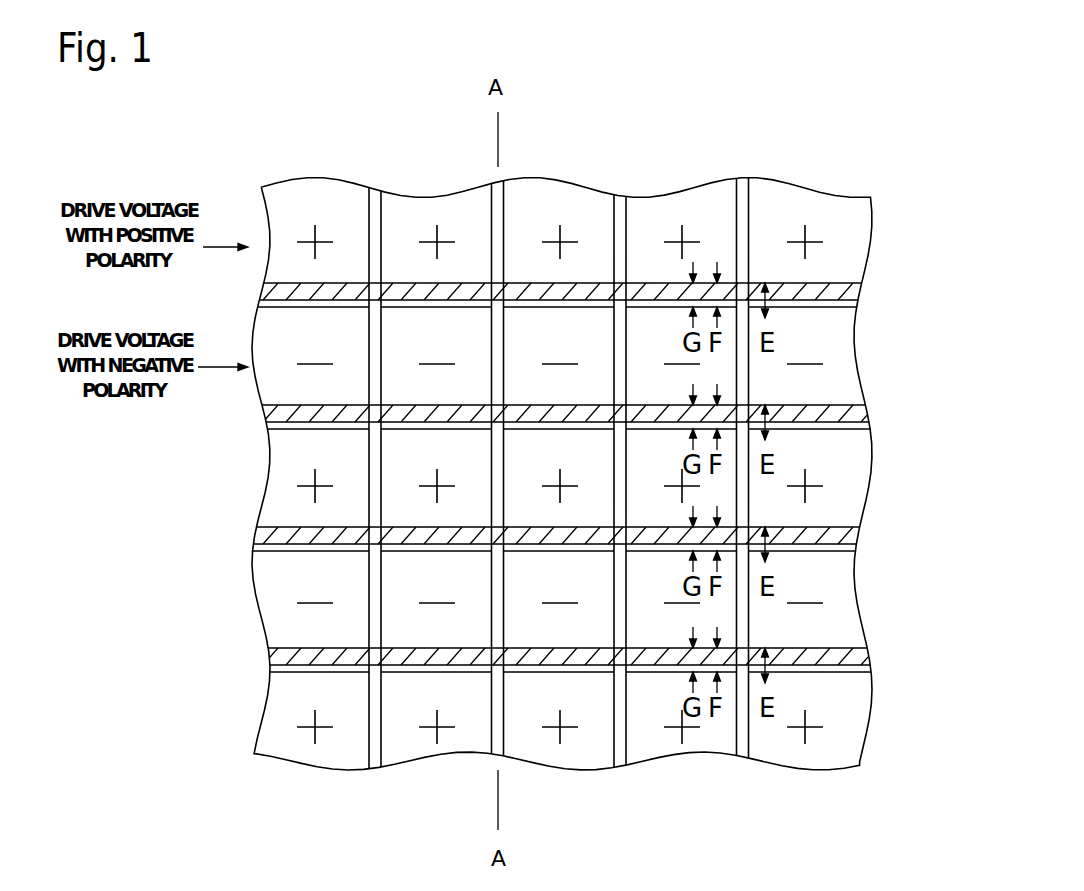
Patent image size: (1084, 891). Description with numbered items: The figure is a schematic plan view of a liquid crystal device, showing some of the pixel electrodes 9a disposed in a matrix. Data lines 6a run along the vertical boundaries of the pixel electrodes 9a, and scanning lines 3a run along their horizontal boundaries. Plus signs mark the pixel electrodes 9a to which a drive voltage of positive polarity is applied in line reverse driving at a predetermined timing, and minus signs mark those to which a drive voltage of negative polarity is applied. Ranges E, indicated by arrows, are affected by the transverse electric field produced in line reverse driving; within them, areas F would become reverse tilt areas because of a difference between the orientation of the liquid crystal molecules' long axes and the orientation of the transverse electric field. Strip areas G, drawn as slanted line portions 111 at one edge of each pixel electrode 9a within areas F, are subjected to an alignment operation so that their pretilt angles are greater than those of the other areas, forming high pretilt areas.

The scanning line 3a is at (862, 426).
The data line 6a is at (372, 197).
The pixel electrode 9a is at (708, 186).
The slanted line portion 111 is at (522, 290).